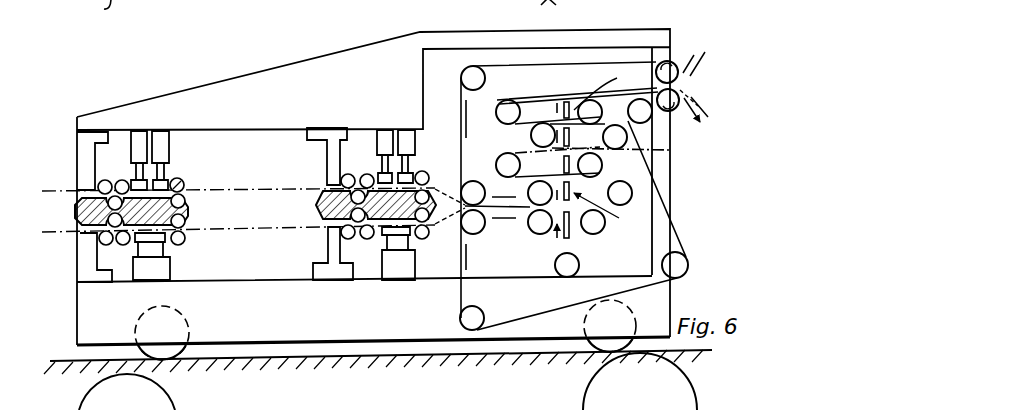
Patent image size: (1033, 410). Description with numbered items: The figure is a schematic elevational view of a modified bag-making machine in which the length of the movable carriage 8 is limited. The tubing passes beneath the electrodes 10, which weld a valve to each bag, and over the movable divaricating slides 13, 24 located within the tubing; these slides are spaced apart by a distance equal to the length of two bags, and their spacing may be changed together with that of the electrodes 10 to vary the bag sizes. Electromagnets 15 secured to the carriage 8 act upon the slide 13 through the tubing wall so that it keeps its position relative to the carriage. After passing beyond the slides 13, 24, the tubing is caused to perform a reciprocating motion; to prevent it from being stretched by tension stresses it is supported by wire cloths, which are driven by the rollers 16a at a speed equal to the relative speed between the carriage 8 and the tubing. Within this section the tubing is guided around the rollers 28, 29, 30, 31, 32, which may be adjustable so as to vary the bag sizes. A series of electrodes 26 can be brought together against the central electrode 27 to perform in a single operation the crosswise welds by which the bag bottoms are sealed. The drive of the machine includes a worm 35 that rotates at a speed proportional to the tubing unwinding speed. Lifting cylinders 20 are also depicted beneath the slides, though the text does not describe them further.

The movable carriage 8 is at (356, 332).
The electrode 10 is at (160, 131).
The divaricating slide 13 is at (177, 180).
The electromagnet 15 is at (80, 160).
The roller 16a is at (693, 76).
The lifting cylinder 20 is at (165, 268).
The movable divaricating slide 24 is at (387, 207).
The electrode 26 is at (610, 149).
The central electrode 27 is at (569, 164).
The roller 28 is at (500, 106).
The roller 29 is at (538, 127).
The roller 30 is at (505, 162).
The roller 31 is at (476, 70).
The roller 32 is at (485, 325).
The worm 35 is at (388, 355).